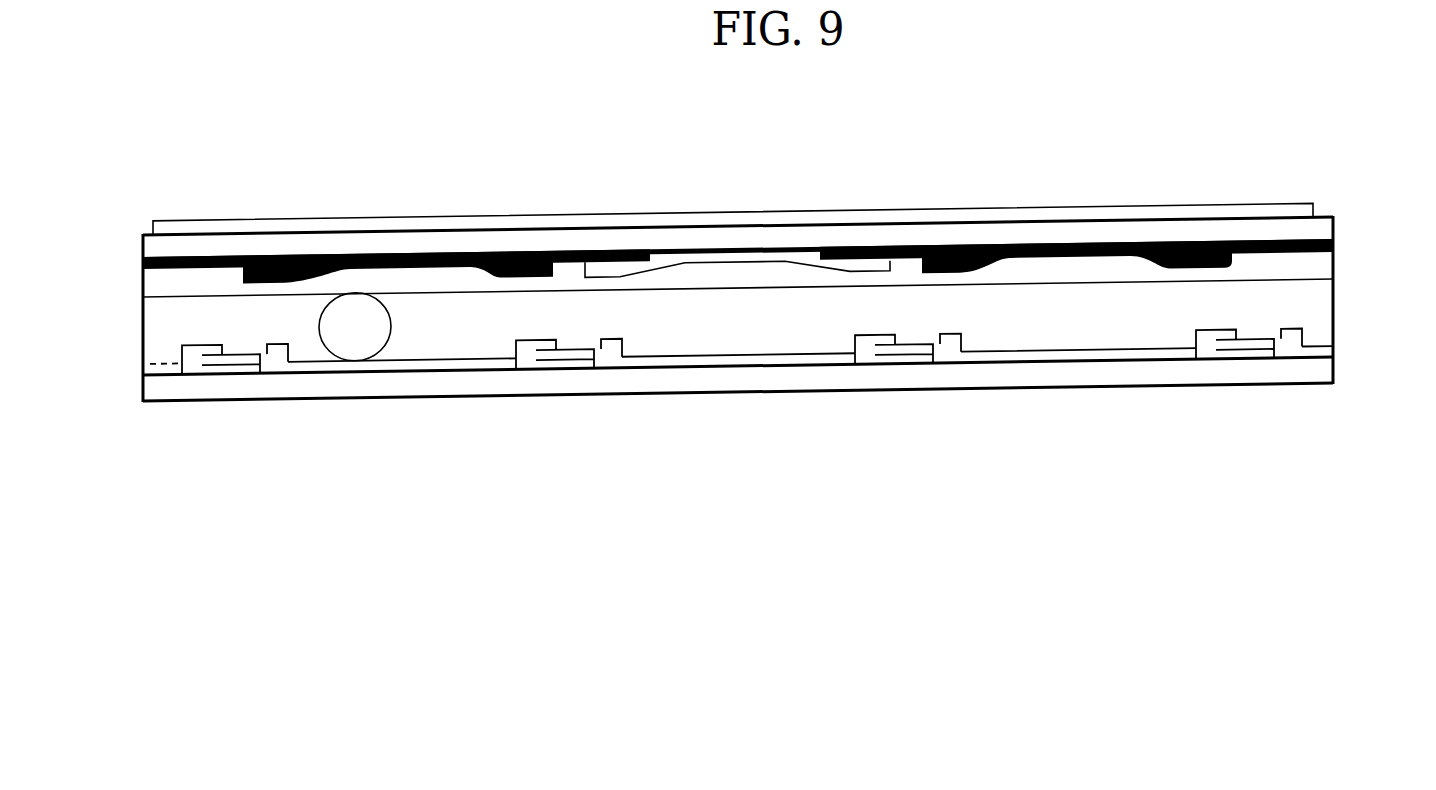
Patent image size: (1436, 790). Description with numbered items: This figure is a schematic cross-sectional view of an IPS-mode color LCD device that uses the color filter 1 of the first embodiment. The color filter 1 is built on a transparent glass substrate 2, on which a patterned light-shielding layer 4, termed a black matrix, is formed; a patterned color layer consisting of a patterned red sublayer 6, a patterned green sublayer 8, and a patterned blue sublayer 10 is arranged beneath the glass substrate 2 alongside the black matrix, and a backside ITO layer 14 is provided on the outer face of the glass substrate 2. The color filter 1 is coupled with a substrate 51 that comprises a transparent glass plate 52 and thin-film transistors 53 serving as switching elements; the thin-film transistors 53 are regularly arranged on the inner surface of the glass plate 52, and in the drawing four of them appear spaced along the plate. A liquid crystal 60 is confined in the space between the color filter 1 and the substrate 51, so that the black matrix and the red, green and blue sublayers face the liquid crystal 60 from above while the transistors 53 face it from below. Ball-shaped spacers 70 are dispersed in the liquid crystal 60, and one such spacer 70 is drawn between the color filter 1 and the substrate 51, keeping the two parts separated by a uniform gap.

The color filter 1 is at (1347, 202).
The transparent glass substrate 2 is at (933, 238).
The patterned light-shielding layer 4 is at (1255, 240).
The patterned red sublayer 6 is at (1063, 244).
The patterned green sublayer 8 is at (743, 259).
The patterned blue sublayer 10 is at (403, 256).
The backside ITO layer 14 is at (1182, 212).
The substrate 51 is at (1350, 349).
The transparent glass plate 52 is at (1063, 375).
The thin-film transistors 53 is at (1257, 368).
The liquid crystal 60 is at (1348, 282).
The ball-shaped spacers 70 is at (348, 333).